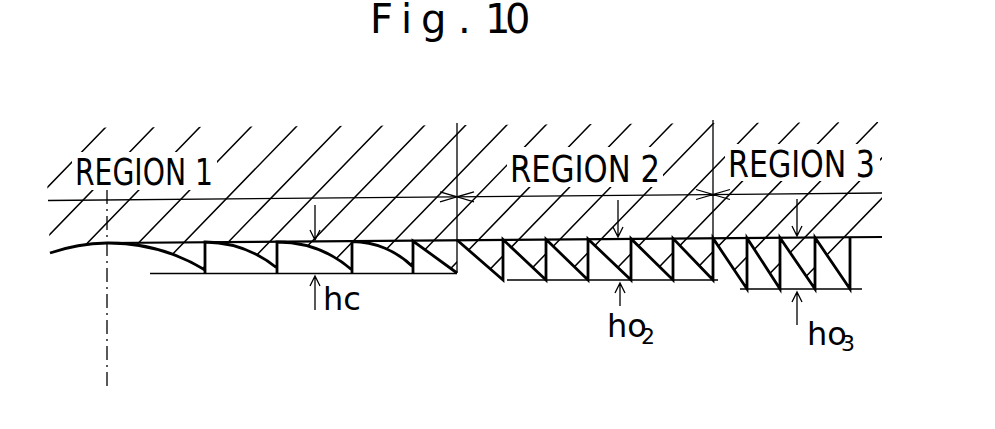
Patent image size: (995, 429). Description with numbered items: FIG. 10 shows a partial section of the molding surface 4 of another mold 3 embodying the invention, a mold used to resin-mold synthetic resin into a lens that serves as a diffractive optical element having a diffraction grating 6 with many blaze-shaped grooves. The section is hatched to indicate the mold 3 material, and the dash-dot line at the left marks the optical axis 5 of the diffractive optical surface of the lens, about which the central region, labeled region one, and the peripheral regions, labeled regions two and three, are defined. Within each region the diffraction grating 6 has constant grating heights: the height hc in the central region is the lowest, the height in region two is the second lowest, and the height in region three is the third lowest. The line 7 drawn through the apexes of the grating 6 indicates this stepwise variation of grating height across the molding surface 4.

The mold 3 is at (397, 128).
The molding surface 4 is at (227, 268).
The optical axis 5 is at (107, 356).
The diffraction grating 6 is at (270, 252).
The line through the apexes of the grating 7 is at (383, 276).